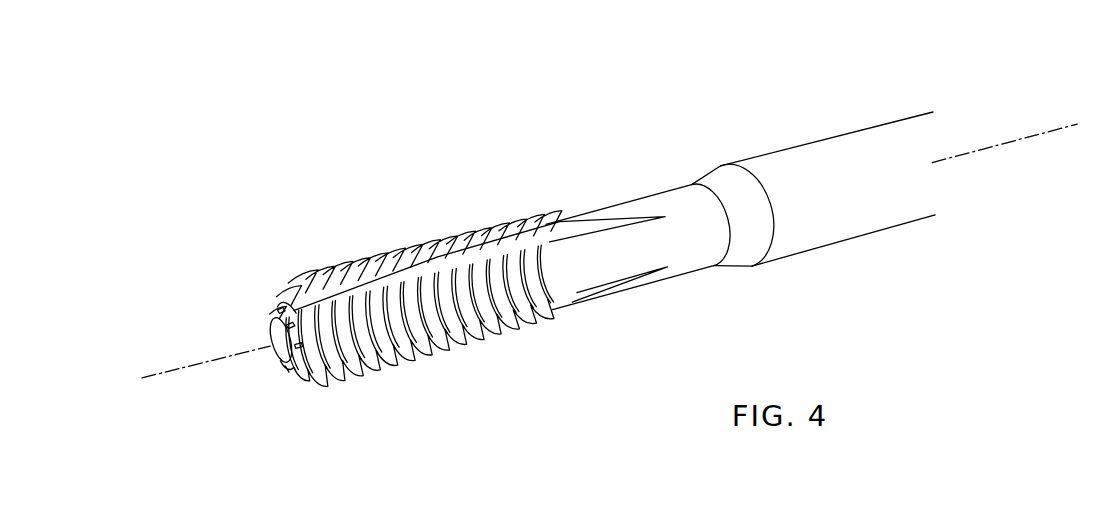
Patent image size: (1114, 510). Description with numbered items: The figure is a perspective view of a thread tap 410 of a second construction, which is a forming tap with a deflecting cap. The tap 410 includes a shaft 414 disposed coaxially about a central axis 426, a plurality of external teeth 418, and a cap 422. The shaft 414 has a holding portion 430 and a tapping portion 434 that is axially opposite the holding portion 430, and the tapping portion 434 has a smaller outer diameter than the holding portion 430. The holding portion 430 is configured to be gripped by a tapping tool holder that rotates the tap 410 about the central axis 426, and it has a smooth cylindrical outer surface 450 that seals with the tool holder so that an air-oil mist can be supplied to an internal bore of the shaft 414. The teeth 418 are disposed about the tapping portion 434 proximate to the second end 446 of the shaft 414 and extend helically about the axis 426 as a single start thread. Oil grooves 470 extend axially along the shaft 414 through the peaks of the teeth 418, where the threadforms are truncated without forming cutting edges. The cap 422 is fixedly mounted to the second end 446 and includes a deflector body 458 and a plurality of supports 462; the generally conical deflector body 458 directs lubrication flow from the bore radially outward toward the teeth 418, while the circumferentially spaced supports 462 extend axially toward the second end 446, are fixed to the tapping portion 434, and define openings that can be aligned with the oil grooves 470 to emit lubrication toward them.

The thread tap 410 is at (553, 278).
The shaft 414 is at (655, 205).
The external teeth 418 is at (393, 258).
The cap 422 is at (428, 303).
The central axis 426 is at (1025, 138).
The holding portion 430 is at (762, 155).
The tapping portion 434 is at (450, 355).
The second end 446 is at (300, 367).
The outer surface 450 is at (856, 151).
The deflector body 458 is at (283, 343).
The supports 462 is at (332, 367).
The oil grooves 470 is at (484, 236).